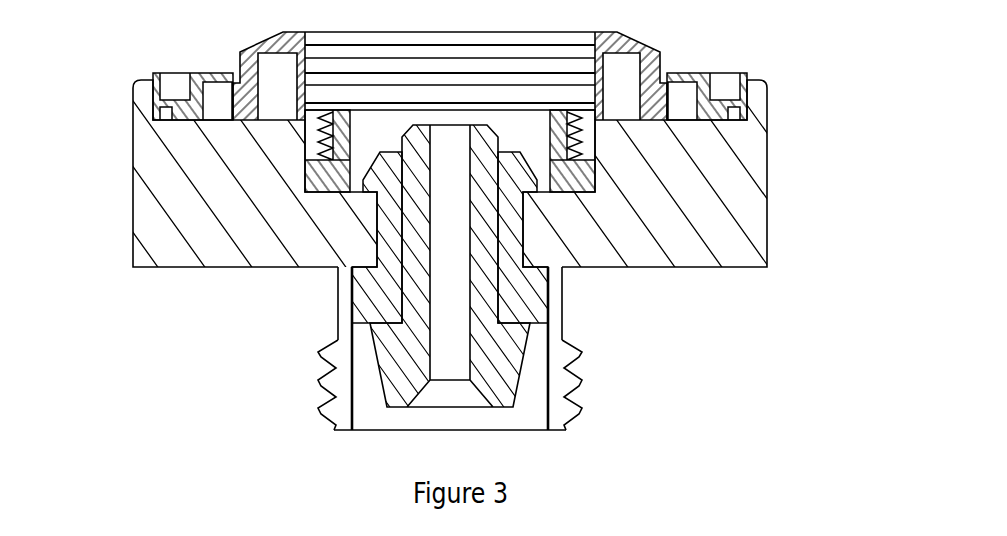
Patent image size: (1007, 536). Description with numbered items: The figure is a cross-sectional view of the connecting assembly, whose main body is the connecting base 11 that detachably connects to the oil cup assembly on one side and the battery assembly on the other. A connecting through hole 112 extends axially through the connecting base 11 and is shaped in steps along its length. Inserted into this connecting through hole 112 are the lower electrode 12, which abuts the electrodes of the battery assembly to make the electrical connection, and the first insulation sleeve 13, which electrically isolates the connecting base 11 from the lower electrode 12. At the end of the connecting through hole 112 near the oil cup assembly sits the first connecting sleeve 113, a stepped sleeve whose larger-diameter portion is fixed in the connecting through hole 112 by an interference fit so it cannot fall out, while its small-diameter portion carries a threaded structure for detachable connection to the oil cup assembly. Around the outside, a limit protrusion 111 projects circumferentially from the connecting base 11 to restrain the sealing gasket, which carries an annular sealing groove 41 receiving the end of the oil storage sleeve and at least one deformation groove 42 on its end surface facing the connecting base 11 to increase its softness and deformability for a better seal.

The connecting base 11 is at (748, 203).
The limit protrusion 111 is at (755, 103).
The connecting through hole 112 is at (540, 400).
The first connecting sleeve 113 is at (596, 170).
The lower electrode 12 is at (510, 350).
The first insulation sleeve 13 is at (533, 305).
The sealing groove 41 is at (173, 92).
The deformation groove 42 is at (273, 66).